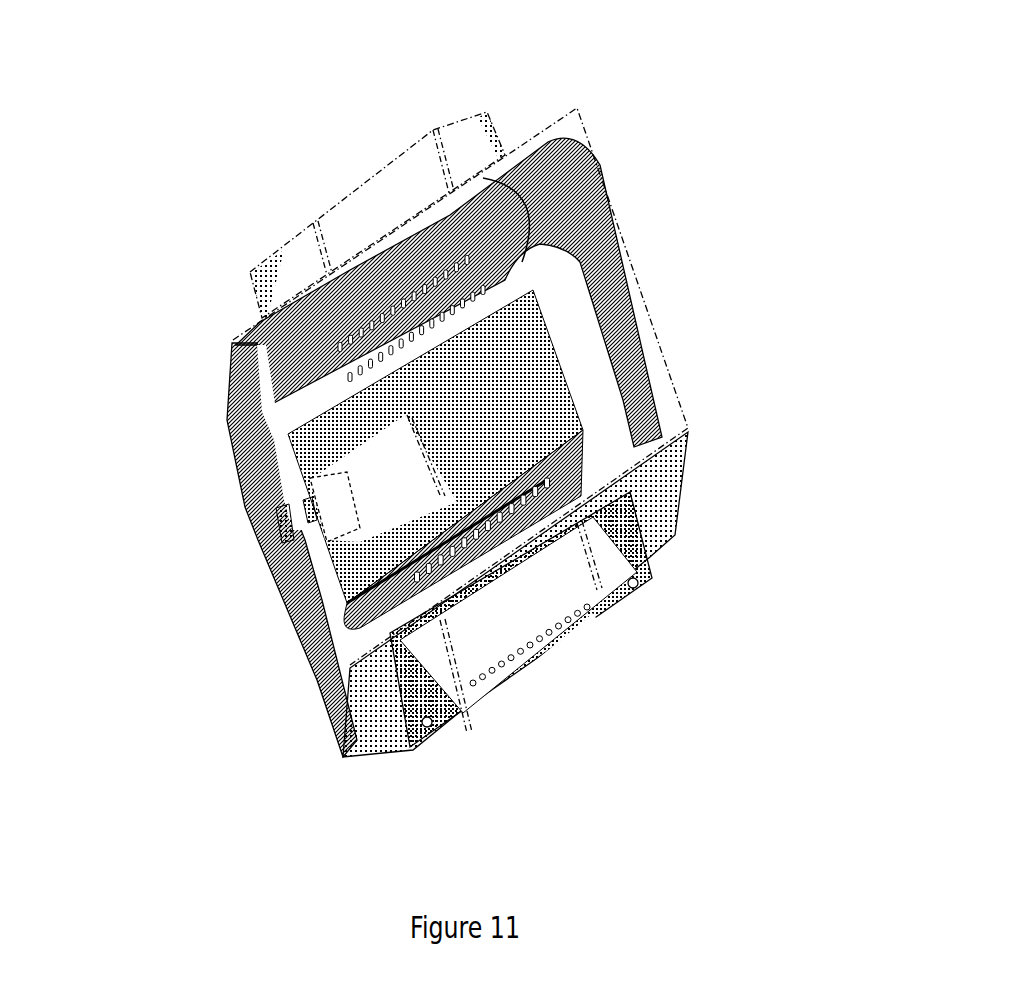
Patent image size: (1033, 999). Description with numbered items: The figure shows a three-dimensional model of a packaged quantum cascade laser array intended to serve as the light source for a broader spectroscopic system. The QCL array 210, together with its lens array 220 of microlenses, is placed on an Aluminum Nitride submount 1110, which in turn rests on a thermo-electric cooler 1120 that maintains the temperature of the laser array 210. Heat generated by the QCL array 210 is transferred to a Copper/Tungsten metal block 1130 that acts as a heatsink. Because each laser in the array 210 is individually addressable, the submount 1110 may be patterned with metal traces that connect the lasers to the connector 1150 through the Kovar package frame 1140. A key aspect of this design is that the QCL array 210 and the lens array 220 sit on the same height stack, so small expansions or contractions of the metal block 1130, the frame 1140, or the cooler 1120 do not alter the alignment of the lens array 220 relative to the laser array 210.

The submount 1110 is at (552, 439).
The thermoelectric cooler 1120 is at (300, 492).
The metal block 1130 is at (571, 362).
The frame 1140 is at (398, 238).
The connector 1150 is at (288, 270).
The QCL array 210 is at (338, 527).
The lens array 220 is at (303, 520).